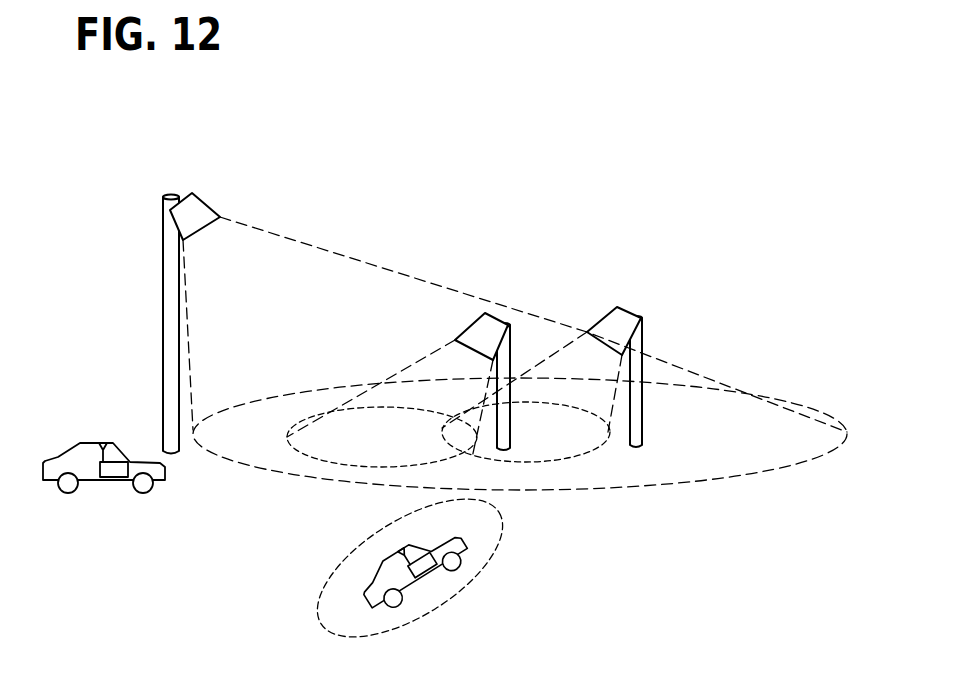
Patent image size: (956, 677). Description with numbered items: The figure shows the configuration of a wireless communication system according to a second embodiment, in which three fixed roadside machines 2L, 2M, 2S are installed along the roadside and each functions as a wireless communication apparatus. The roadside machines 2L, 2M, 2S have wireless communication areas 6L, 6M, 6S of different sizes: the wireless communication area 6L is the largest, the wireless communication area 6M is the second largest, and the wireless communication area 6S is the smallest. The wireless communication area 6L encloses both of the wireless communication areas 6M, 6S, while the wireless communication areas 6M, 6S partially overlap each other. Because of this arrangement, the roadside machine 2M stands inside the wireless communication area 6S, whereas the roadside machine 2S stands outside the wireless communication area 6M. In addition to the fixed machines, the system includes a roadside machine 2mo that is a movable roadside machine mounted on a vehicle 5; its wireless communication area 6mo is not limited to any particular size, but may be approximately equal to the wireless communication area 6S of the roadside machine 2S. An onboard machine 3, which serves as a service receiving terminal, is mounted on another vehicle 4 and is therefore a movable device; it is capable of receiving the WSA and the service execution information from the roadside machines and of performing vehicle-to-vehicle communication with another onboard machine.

The roadside machine 2L is at (173, 167).
The roadside machine 2M is at (460, 322).
The roadside machine 2S is at (592, 297).
The roadside machine 2mo is at (420, 560).
The onboard machine 3 is at (123, 462).
The vehicle 4 is at (80, 443).
The vehicle 5 is at (380, 583).
The wireless communication area 6L is at (708, 480).
The wireless communication area 6M is at (354, 468).
The wireless communication area 6S is at (560, 462).
The wireless communication area 6mo is at (493, 574).